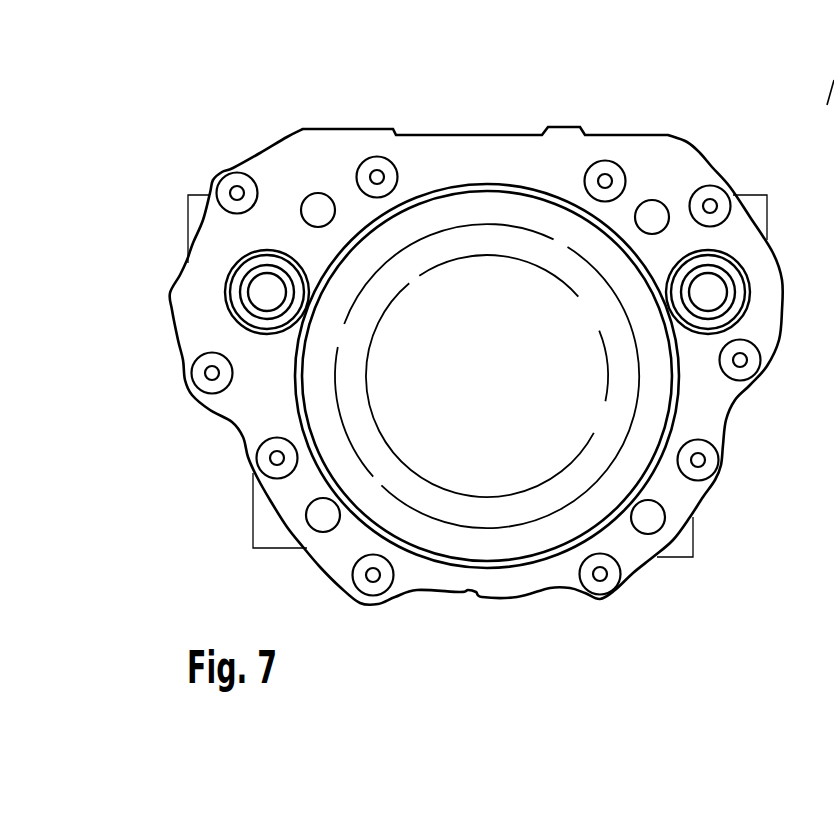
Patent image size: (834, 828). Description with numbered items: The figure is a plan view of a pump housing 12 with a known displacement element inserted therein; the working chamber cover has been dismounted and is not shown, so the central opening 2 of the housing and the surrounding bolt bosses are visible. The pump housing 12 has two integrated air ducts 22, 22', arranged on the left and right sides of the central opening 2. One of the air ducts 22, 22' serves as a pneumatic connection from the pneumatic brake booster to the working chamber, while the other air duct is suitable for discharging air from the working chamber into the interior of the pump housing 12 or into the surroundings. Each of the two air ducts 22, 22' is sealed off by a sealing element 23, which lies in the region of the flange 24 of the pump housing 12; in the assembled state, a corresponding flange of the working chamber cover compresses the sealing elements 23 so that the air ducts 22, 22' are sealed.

The bearing bore opening 2 is at (487, 207).
The pump housing 12 is at (638, 132).
The air duct 22 is at (753, 279).
The air duct 22' is at (213, 279).
The sealing element 23 is at (237, 302).
The flange 24 is at (250, 415).